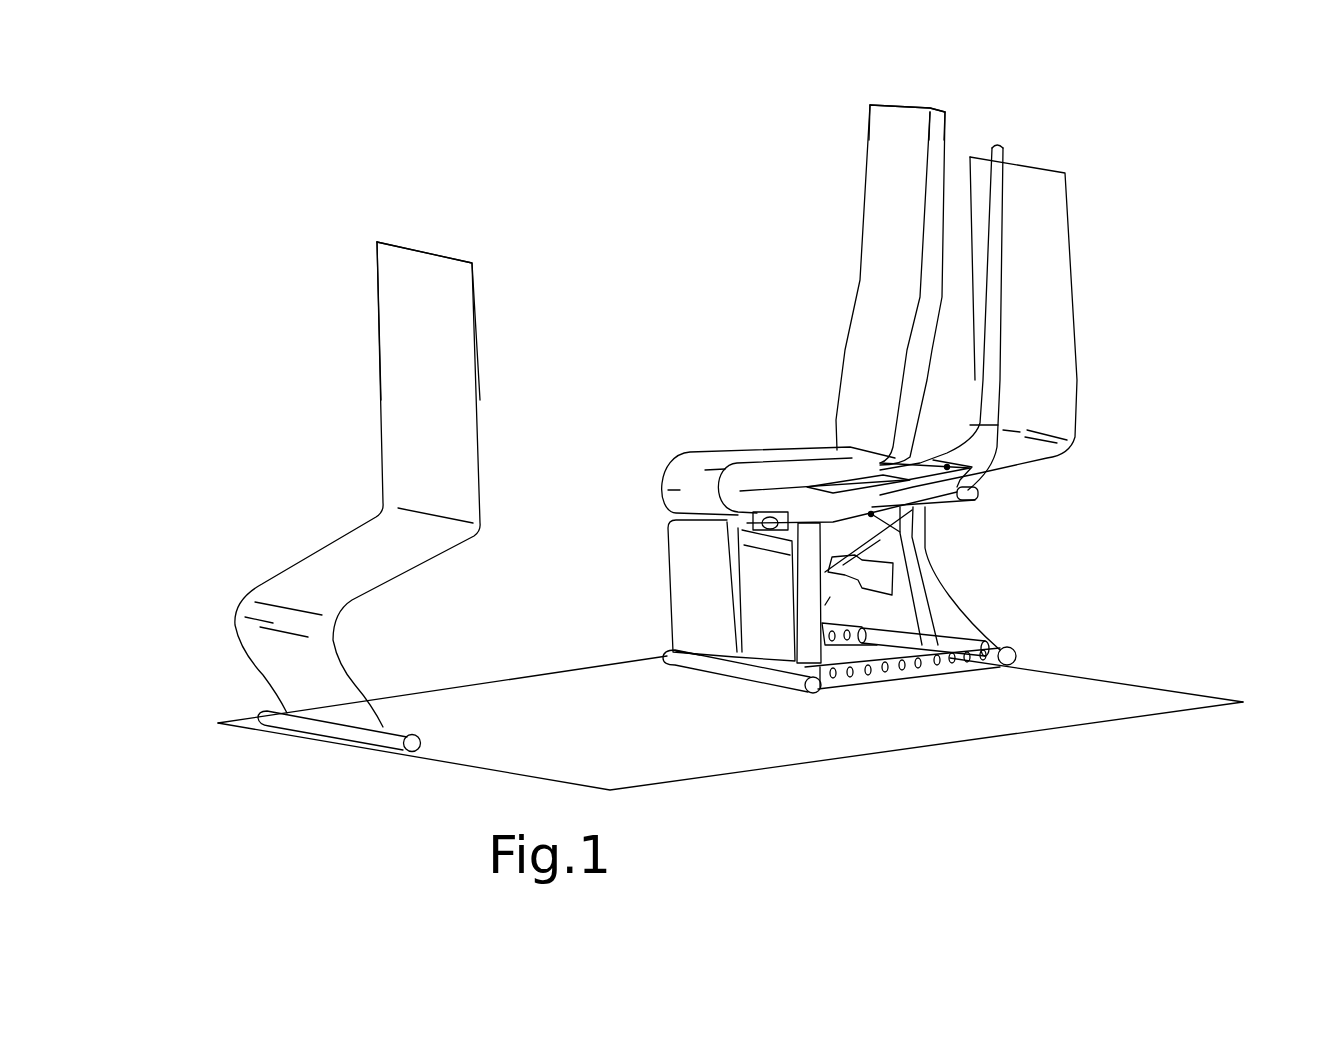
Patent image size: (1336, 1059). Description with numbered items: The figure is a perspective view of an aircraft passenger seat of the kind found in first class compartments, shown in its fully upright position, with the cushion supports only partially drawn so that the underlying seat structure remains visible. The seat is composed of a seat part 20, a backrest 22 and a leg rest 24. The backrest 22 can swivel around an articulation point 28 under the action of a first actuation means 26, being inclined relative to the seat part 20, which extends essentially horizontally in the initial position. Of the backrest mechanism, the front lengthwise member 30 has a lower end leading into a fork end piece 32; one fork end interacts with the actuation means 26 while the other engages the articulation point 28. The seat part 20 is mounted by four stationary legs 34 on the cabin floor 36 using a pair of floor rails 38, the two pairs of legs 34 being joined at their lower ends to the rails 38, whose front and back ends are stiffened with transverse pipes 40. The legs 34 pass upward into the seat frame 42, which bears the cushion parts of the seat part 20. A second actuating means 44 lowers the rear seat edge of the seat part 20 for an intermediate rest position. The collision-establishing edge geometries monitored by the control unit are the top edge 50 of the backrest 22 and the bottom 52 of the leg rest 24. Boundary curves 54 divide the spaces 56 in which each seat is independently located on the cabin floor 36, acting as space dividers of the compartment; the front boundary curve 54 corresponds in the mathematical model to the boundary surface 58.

The seat part 20 is at (735, 445).
The backrest 22 is at (860, 302).
The leg rest 24 is at (668, 566).
The first actuation means 26 is at (968, 502).
The articulation point 28 is at (985, 458).
The front lengthwise member 30 is at (993, 212).
The fork end piece 32 is at (975, 447).
The stationary legs 34 is at (927, 622).
The cabin floor 36 is at (1147, 700).
The floor rails 38 is at (950, 674).
The transverse pipes 40 is at (668, 652).
The seat frame 42 is at (873, 514).
The second actuating means 44 is at (858, 560).
The top edge of the backrest 50 is at (909, 103).
The bottom of the leg rest 52 is at (700, 660).
The boundary curves 54 is at (425, 303).
The spaces 56 is at (283, 383).
The boundary surface 58 is at (343, 575).